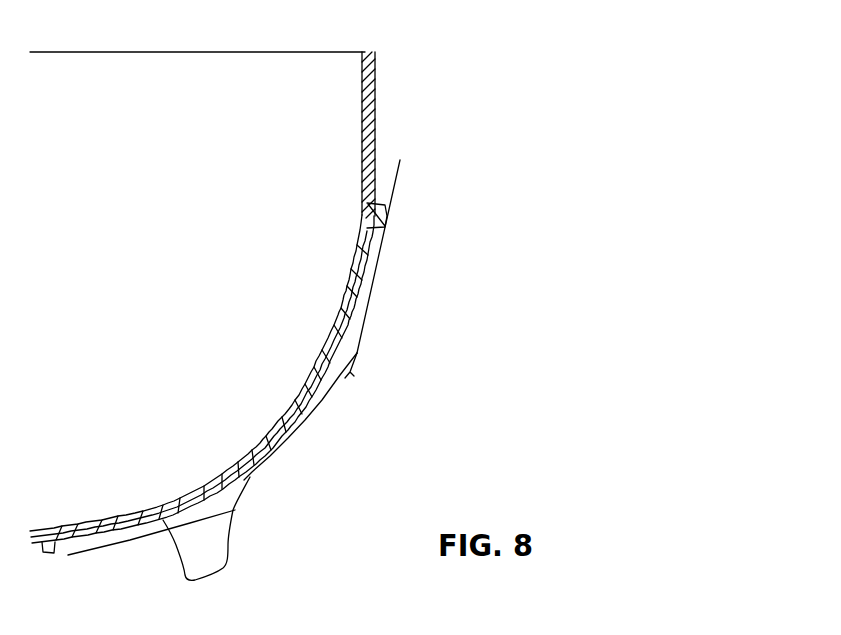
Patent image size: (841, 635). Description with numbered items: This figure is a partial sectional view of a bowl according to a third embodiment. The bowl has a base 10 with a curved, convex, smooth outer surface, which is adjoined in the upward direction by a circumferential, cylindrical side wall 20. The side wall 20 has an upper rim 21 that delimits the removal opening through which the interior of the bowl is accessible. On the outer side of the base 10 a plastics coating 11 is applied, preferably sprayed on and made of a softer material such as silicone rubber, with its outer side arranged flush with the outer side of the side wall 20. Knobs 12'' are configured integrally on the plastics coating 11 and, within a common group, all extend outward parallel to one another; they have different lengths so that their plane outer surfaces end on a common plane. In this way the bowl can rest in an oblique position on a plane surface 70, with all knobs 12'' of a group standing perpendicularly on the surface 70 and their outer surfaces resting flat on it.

The upper rim 21 is at (373, 52).
The side wall 20 is at (375, 107).
The base 10 is at (357, 265).
The plastics coating 11 is at (332, 345).
The knobs 12'' is at (229, 454).
The surface 70 is at (214, 532).